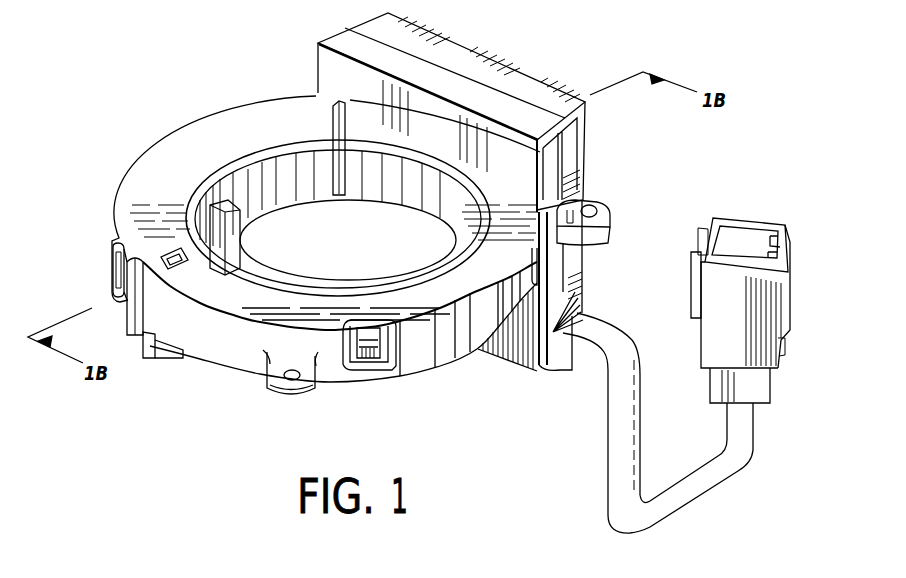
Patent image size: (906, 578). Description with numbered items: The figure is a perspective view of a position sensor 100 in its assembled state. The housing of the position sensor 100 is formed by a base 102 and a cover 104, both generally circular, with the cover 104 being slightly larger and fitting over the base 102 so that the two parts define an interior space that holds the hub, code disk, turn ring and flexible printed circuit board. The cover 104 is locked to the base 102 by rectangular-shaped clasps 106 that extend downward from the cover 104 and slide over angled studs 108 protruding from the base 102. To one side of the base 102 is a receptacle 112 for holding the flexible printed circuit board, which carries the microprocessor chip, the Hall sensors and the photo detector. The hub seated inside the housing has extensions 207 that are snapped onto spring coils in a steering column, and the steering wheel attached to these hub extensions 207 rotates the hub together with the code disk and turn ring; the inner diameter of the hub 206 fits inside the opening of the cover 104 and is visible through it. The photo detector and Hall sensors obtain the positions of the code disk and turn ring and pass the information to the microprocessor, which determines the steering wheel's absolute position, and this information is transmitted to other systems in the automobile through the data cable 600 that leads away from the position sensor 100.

The position sensor 100 is at (152, 78).
The base 102 is at (233, 360).
The cover 104 is at (137, 181).
The clasps 106 is at (393, 360).
The angled studs 108 is at (366, 352).
The receptacle 112 is at (535, 42).
The inner diameter of the hub 206 is at (260, 180).
The hub extensions 207 is at (337, 125).
The data cable 600 is at (747, 437).